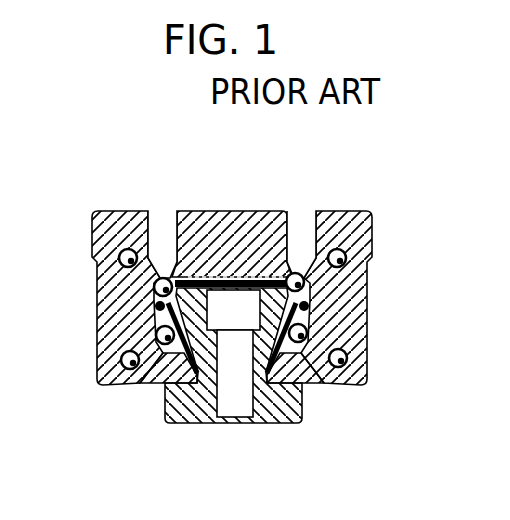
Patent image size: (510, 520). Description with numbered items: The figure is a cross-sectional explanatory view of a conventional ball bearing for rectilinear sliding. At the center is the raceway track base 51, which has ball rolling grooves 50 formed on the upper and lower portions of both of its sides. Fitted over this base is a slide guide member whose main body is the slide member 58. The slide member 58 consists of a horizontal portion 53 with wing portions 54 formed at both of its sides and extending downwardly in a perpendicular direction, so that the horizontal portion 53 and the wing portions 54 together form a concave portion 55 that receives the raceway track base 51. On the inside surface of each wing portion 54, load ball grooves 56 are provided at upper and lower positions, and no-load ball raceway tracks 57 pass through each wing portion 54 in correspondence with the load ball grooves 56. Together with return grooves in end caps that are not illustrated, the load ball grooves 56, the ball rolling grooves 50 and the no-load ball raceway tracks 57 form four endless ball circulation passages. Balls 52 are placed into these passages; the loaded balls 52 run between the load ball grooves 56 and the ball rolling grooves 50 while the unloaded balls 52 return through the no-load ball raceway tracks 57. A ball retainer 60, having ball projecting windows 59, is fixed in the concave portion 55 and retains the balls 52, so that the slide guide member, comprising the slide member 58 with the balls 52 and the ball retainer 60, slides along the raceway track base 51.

The ball rolling grooves 50 is at (204, 225).
The raceway track base 51 is at (177, 425).
The balls 52 is at (160, 270).
The horizontal portion 53 is at (250, 222).
The wing portions 54 is at (367, 322).
The concave portion 55 is at (294, 216).
The load ball grooves 56 is at (327, 383).
The no-load ball raceway tracks 57 is at (96, 258).
The slide member 58 is at (92, 220).
The ball projecting windows 59 is at (145, 293).
The ball retainer 60 is at (140, 325).